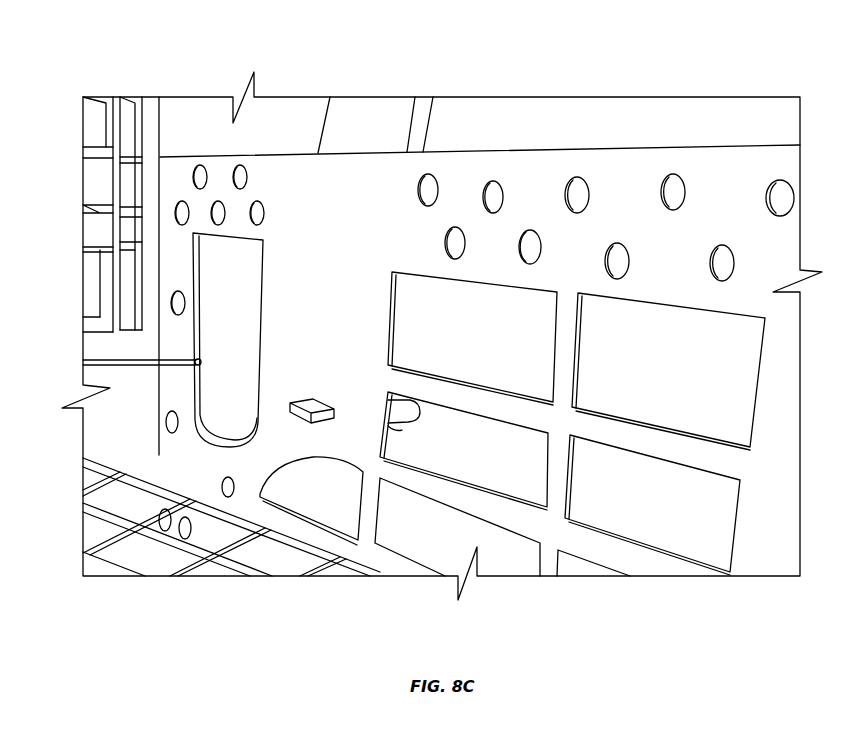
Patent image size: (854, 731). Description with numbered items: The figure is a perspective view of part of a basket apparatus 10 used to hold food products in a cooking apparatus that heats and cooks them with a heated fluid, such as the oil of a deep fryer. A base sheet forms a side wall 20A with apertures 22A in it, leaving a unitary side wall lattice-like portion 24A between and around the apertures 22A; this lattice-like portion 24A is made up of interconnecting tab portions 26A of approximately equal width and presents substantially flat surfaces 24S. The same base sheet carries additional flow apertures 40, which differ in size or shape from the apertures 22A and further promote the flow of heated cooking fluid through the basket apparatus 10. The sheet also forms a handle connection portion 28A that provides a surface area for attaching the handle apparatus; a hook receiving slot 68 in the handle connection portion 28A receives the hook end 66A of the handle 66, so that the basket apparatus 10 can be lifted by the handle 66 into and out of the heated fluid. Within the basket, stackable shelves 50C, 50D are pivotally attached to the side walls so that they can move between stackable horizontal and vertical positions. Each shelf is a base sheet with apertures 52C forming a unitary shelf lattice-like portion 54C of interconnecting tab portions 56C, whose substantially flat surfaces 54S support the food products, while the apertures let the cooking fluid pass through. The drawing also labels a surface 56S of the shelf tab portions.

The basket apparatus 10 is at (427, 55).
The side wall 20A is at (642, 157).
The apertures 22A is at (523, 482).
The unitary side wall lattice-like portion 24A is at (480, 392).
The substantially flat surfaces 24S is at (548, 545).
The interconnecting tab portions 26A is at (568, 375).
The handle connection portion 28A is at (277, 177).
The additional flow apertures 40 is at (685, 195).
The stackable shelf 50C is at (142, 527).
The stackable shelf 50D is at (100, 208).
The apertures 52C is at (285, 572).
The unitary shelf lattice-like portion 54C is at (191, 561).
The substantially flat surfaces 54S is at (117, 265).
The interconnecting tab portions 56C is at (210, 563).
The floor cross beam 56S is at (136, 562).
The handle 66 is at (348, 105).
The hook end 66A is at (290, 412).
The hook receiving slot 68 is at (318, 402).